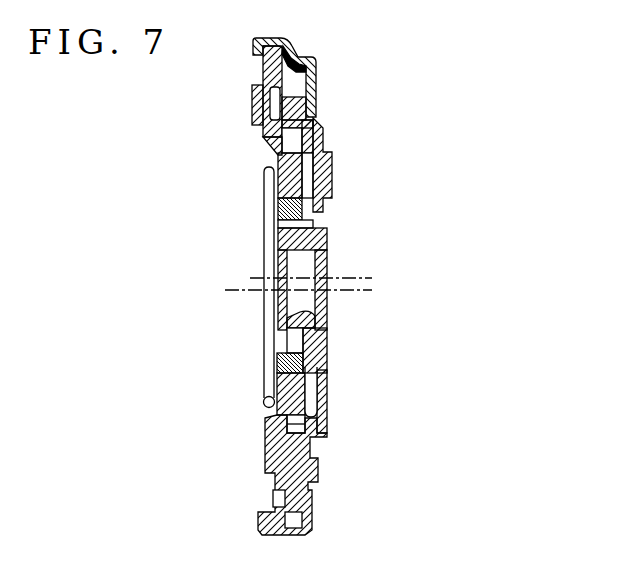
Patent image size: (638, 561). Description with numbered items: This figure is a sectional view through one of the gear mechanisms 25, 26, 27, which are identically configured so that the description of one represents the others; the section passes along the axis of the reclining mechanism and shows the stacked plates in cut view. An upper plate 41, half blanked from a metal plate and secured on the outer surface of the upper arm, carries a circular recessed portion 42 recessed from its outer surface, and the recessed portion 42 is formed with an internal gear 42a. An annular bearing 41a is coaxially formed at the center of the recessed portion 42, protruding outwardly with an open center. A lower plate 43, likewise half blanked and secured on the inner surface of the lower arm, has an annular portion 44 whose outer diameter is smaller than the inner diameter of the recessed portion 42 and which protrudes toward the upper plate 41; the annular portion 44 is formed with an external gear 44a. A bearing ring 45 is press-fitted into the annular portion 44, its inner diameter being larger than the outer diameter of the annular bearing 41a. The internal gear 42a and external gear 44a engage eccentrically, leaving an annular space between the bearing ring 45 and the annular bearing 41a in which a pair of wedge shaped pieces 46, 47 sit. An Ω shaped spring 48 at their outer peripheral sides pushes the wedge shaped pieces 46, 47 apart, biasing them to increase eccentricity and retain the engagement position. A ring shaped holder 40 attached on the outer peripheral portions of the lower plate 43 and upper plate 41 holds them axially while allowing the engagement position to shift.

The gear mechanism 25 is at (351, 274).
The gear mechanism 26 is at (351, 274).
The clutch assembly 27 is at (398, 71).
The ring shaped holder 40 is at (302, 56).
The upper plate 41 is at (324, 208).
The annular bearing 41a is at (322, 307).
The recessed portion 42 is at (319, 428).
The internal gear 42a is at (276, 133).
The lower plate 43 is at (272, 451).
The annular portion 44 is at (328, 183).
The external gear 44a is at (322, 141).
The bearing ring 45 is at (306, 369).
The wedge shaped piece 46 is at (349, 355).
The wedge shaped piece 47 is at (323, 350).
The Ω shaped spring 48 is at (266, 373).